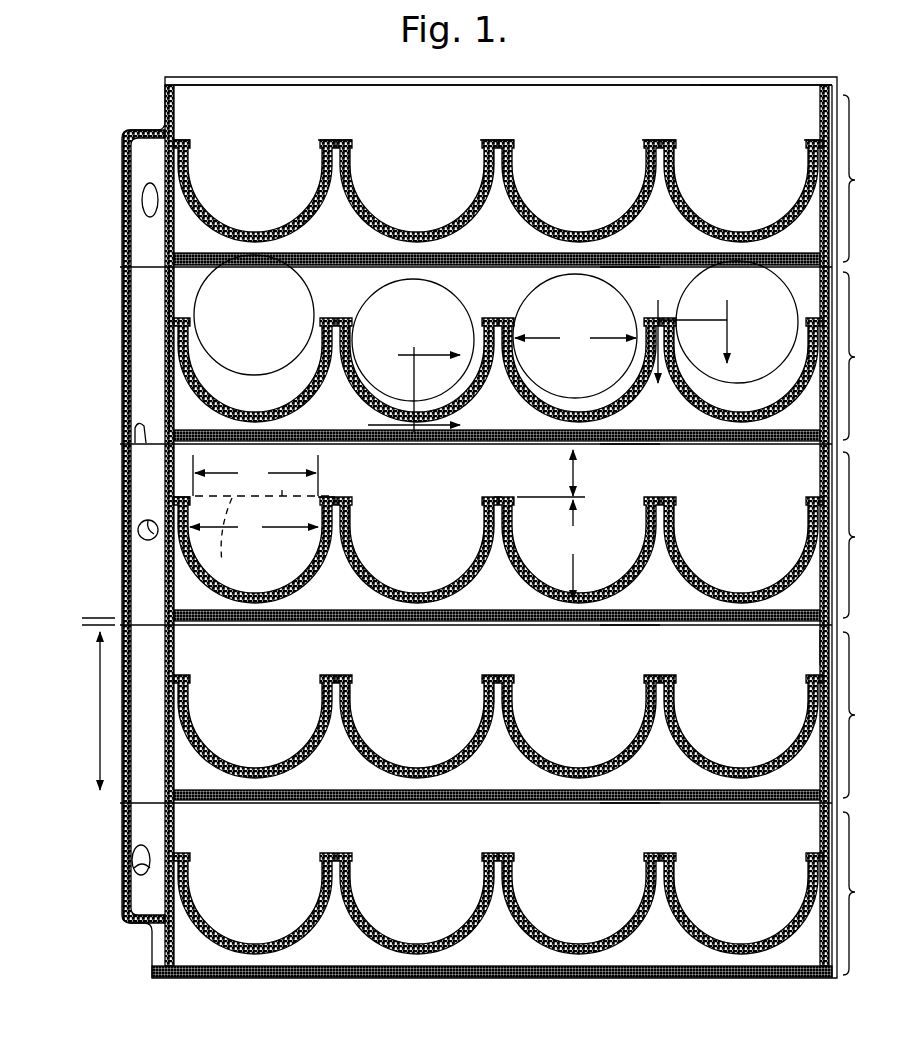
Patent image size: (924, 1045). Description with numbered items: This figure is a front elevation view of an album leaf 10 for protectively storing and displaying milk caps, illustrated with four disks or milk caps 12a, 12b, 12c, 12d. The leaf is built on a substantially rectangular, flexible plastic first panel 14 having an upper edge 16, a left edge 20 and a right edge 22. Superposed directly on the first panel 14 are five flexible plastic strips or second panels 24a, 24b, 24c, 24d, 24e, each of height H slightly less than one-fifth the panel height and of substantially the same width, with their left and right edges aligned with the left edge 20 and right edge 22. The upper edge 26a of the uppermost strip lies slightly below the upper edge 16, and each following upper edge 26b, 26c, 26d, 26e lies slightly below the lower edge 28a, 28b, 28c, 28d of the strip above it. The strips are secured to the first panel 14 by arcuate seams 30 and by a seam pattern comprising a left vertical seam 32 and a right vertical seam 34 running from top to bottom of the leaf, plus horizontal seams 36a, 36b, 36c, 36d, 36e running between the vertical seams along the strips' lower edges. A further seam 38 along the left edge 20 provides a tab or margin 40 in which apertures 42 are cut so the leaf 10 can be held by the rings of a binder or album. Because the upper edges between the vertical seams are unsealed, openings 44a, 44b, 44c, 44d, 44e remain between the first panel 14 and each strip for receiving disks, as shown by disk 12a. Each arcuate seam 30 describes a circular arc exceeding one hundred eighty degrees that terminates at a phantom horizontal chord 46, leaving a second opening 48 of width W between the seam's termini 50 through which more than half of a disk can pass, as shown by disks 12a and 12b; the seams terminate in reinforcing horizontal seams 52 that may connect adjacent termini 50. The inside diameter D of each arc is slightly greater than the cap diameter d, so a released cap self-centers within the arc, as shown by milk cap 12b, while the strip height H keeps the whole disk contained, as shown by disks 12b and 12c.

The album leaf 10 is at (127, 112).
The milk cap 12a is at (276, 316).
The milk cap 12b is at (433, 329).
The milk cap 12c is at (593, 324).
The milk cap 12d is at (754, 304).
The first panel 14 is at (630, 80).
The upper edge 16 is at (258, 77).
The left edge 20 is at (120, 343).
The right edge 22 is at (836, 79).
The second panel 24a is at (870, 178).
The second panel 24b is at (870, 356).
The second panel 24c is at (869, 535).
The second panel 24d is at (870, 715).
The second panel 24e is at (870, 893).
The upper edge 26a is at (568, 88).
The upper edge 26b is at (425, 268).
The upper edge 26c is at (368, 446).
The upper edge 26d is at (236, 627).
The upper edge 26e is at (325, 793).
The lower edge 28a is at (126, 268).
The lower edge 28b is at (127, 434).
The lower edge 28c is at (142, 618).
The lower edge 28d is at (140, 778).
The arcuate seam 30 is at (205, 228).
The left vertical seam 32 is at (168, 292).
The right vertical seam 34 is at (818, 648).
The horizontal seam 36a is at (453, 262).
The horizontal seam 36b is at (695, 432).
The horizontal seam 36c is at (366, 612).
The horizontal seam 36d is at (436, 793).
The horizontal seam 36e is at (322, 968).
The seam 38 is at (120, 396).
The margin 40 is at (142, 398).
The aperture 42 is at (146, 216).
The opening 44a is at (723, 87).
The opening 44b is at (628, 266).
The opening 44c is at (618, 446).
The opening 44d is at (622, 622).
The opening 44e is at (617, 804).
The horizontal chord 46 is at (236, 540).
The second opening 48 is at (282, 493).
The terminus 50 is at (187, 142).
The horizontal seam 52 is at (190, 140).